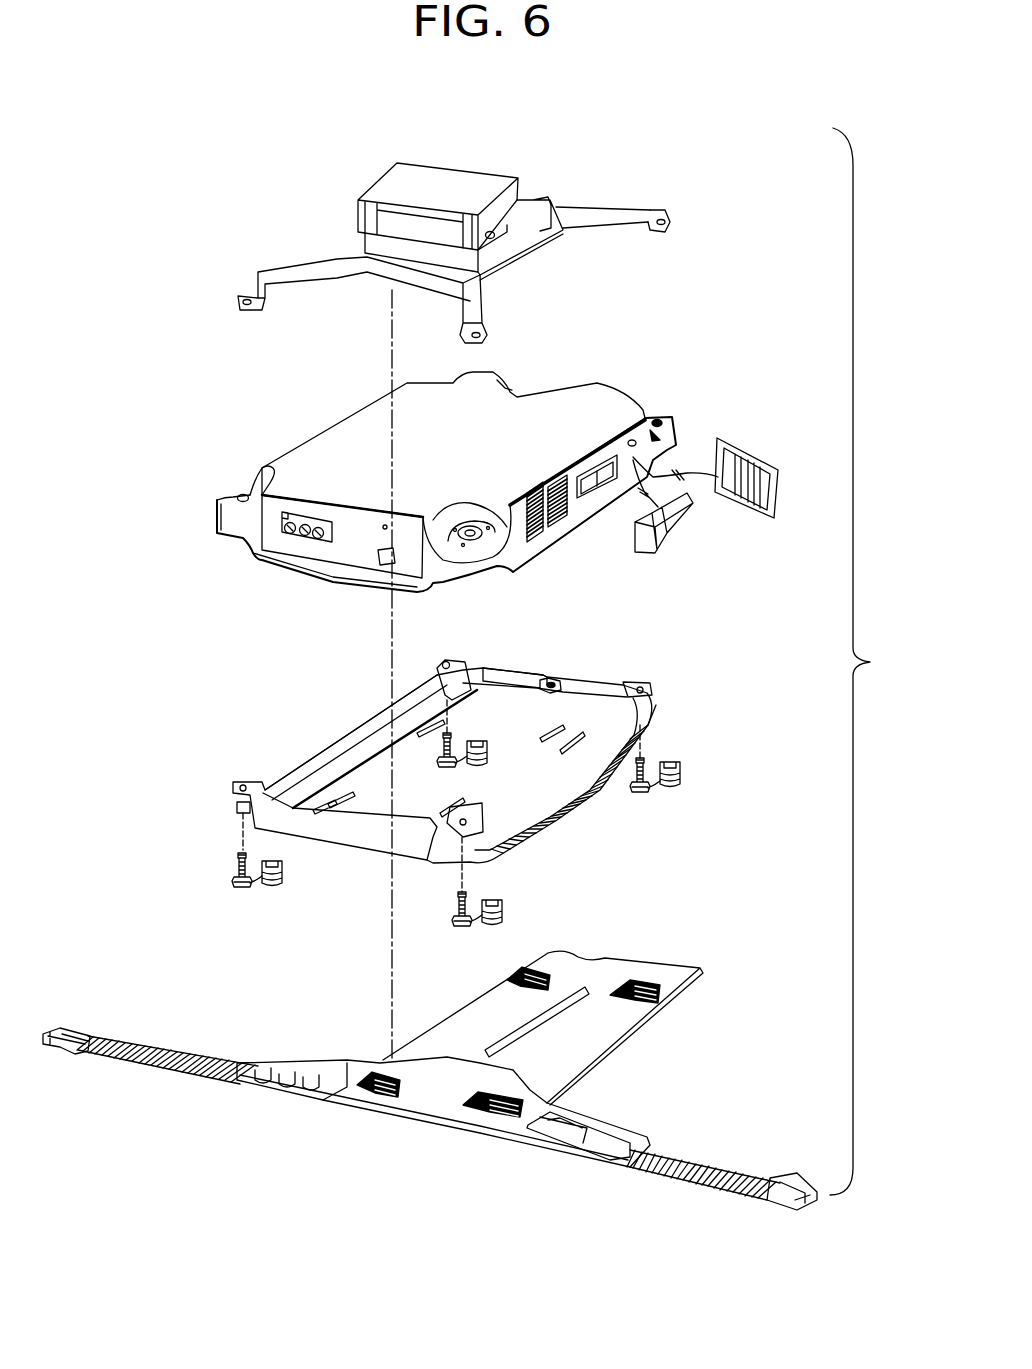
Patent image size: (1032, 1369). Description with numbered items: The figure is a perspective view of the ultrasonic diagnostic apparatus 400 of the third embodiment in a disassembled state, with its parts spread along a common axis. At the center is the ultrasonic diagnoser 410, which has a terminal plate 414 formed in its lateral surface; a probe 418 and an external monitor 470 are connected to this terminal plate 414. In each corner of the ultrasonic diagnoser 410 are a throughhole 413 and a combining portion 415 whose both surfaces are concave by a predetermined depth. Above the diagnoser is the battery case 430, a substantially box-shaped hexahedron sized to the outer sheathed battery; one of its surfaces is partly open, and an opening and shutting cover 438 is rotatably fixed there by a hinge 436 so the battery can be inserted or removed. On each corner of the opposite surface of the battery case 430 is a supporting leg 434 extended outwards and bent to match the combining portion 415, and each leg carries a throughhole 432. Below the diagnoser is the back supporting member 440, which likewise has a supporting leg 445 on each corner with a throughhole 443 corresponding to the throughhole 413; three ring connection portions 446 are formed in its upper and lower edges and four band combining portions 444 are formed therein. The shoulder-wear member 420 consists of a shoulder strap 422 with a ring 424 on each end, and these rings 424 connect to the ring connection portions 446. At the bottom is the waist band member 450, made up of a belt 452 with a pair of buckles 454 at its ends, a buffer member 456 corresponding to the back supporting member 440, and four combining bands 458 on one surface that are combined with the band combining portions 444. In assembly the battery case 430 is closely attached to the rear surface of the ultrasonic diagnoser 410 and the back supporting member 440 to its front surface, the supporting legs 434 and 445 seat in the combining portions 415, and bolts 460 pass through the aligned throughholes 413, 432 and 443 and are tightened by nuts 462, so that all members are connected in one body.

The ultrasonic diagnostic apparatus 400 is at (873, 661).
The ultrasonic diagnoser 410 is at (456, 455).
The throughhole 413 is at (240, 498).
The terminal plate 414 is at (600, 455).
The combining portion 415 is at (257, 466).
The probe 418 is at (682, 522).
The shoulder-wear member 420 is at (498, 754).
The shoulder strap 422 is at (650, 700).
The ring 424 is at (600, 671).
The battery case 430 is at (471, 222).
The throughhole 432 is at (664, 219).
The supporting leg 434 is at (587, 208).
The hinge 436 is at (494, 231).
The opening and shutting cover 438 is at (436, 163).
The back supporting member 440 is at (442, 744).
The throughhole 443 is at (450, 662).
The band combining portion 444 is at (517, 840).
The supporting leg 445 is at (530, 673).
The ring connection portion 446 is at (552, 679).
The waist band member 450 is at (442, 1052).
The belt 452 is at (683, 1165).
The buckle 454 is at (783, 1175).
The buffer member 456 is at (600, 1032).
The combining band 458 is at (643, 980).
The bolt 460 is at (640, 797).
The nut 462 is at (681, 778).
The external monitor 470 is at (743, 458).